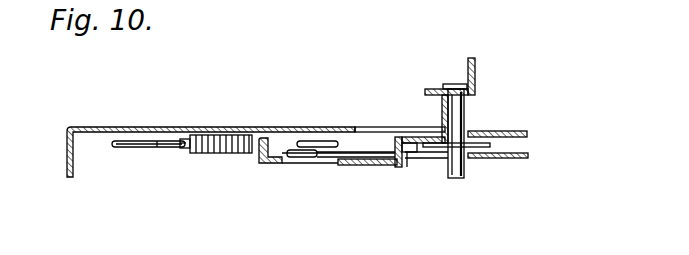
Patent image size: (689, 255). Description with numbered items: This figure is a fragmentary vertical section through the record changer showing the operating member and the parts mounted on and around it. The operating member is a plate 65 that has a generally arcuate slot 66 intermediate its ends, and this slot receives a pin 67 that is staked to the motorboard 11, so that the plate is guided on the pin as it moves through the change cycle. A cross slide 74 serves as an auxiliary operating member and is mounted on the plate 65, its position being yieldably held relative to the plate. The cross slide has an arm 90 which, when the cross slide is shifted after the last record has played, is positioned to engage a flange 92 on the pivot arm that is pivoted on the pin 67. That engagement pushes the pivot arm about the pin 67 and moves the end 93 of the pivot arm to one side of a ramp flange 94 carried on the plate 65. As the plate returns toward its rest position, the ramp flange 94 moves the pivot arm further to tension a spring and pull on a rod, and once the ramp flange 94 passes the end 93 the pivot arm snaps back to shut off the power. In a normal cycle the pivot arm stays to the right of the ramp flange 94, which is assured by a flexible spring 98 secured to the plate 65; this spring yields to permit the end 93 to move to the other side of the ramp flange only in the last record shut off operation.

The operating member 65 is at (88, 126).
The arcuate slot 66 is at (371, 100).
The flexible spring 98 is at (152, 147).
The ramp flange 94 is at (223, 153).
The end of pivot arm 93 is at (275, 163).
The arm of cross slide 90 is at (312, 157).
The flange 92 is at (399, 167).
The pin 67 is at (452, 178).
The motorboard 11 is at (477, 84).
The cross slide 74 is at (497, 159).